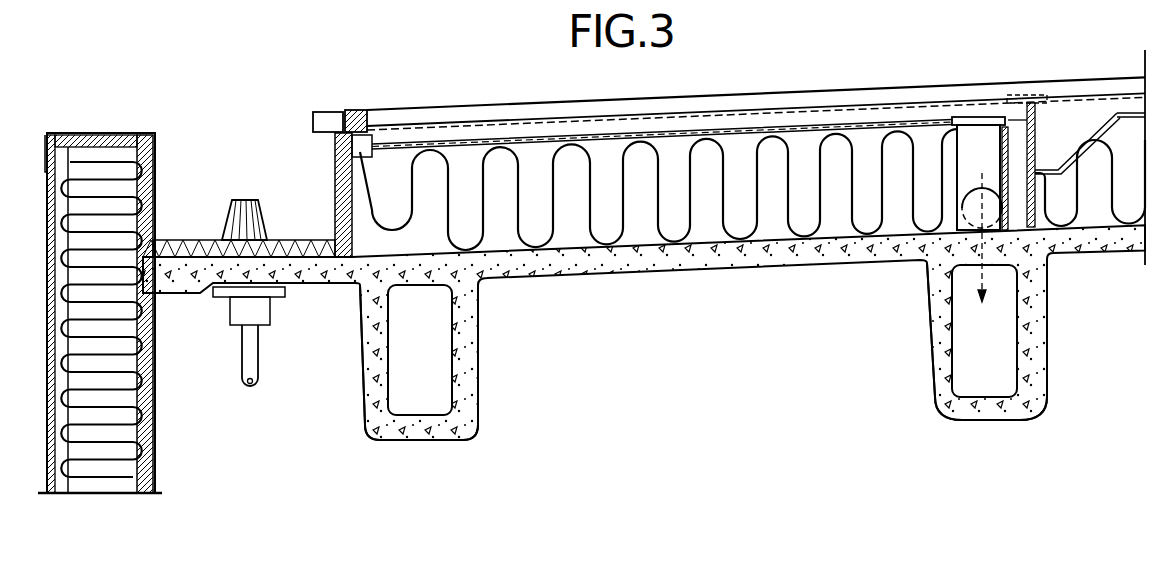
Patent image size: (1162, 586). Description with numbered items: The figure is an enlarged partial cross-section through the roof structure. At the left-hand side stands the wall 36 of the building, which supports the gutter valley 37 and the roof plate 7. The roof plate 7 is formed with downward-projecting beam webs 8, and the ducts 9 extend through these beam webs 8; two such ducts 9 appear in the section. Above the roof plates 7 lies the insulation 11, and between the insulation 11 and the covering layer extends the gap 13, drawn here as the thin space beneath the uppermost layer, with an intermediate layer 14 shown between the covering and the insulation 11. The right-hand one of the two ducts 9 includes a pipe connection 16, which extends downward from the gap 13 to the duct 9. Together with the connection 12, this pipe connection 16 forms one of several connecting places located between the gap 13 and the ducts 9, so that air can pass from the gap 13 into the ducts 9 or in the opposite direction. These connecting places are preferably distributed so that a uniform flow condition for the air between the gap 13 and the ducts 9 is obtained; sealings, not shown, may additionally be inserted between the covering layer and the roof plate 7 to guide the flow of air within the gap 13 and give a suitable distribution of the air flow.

The roof plate 7 is at (670, 268).
The beam web 8 is at (470, 318).
The duct 9 is at (440, 371).
The insulation 11 is at (660, 168).
The connection 12 is at (974, 122).
The gap 13 is at (536, 130).
The panel layer 14 is at (611, 112).
The pipe connection 16 is at (973, 203).
The wall 36 is at (123, 372).
The gutter valley 37 is at (312, 258).